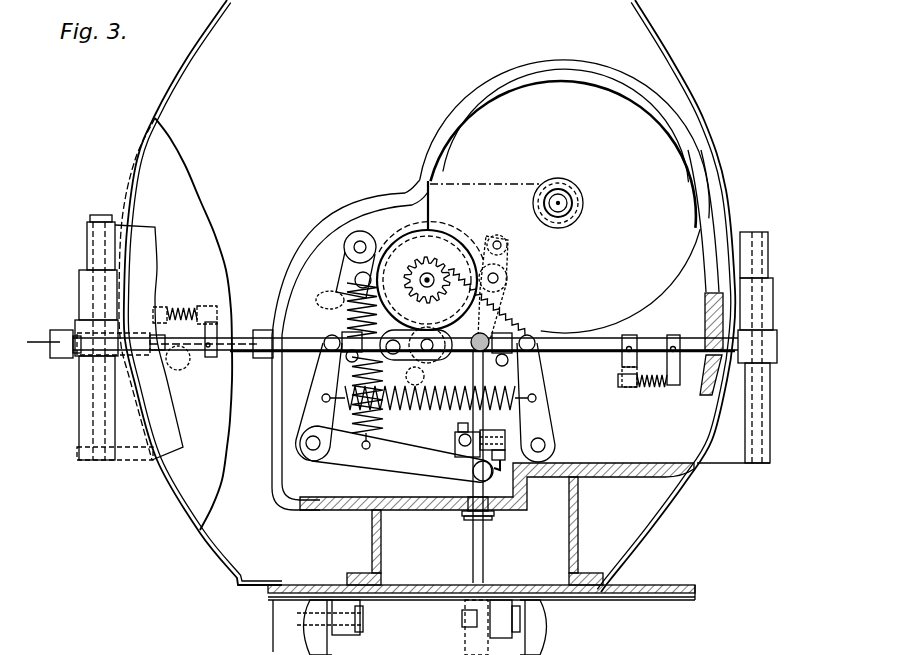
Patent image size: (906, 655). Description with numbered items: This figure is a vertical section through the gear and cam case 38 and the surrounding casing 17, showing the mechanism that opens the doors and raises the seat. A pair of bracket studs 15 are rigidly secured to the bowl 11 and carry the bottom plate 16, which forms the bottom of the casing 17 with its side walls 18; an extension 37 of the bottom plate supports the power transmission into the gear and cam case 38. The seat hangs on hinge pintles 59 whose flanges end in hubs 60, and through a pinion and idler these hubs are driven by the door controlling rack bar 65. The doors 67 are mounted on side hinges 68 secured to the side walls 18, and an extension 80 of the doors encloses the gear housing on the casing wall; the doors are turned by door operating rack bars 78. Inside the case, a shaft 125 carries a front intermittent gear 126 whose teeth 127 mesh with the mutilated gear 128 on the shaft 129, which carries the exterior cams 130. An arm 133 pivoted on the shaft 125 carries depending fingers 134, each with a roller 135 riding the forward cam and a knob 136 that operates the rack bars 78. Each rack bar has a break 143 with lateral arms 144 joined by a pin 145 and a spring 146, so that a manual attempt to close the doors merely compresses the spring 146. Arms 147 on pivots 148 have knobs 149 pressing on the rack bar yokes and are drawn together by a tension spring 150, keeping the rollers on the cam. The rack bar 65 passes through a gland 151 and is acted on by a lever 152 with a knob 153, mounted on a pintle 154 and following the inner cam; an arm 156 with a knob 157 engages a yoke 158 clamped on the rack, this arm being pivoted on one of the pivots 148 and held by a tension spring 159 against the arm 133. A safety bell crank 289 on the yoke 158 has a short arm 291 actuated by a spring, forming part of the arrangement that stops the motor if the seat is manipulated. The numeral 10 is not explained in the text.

The axis indication 10 is at (38, 340).
The bowl 11 is at (495, 553).
The bracket studs 15 is at (305, 642).
The bottom plate 16 is at (410, 594).
The casing 17 is at (672, 59).
The side walls 18 is at (158, 116).
The extension of the bottom plate 37 is at (640, 586).
The gear and cam case 38 is at (702, 232).
The hinge pintles 59 is at (365, 625).
The hubs 60 is at (330, 627).
The door controlling rack bar 65 is at (484, 553).
The doors 67 is at (220, 482).
The side hinges 68 is at (90, 240).
The door operating rack bars 78 is at (242, 353).
The extension of the doors 80 is at (173, 432).
The shaft 125 is at (566, 200).
The front intermittent gear 126 is at (655, 140).
The teeth 127 is at (500, 322).
The mutilated gear 128 is at (424, 302).
The shaft 129 is at (422, 272).
The exterior cams 130 is at (396, 250).
The arm 133 is at (408, 205).
The depending fingers 134 is at (350, 278).
The roller 135 is at (330, 300).
The knobs 136 is at (512, 337).
The break 143 is at (189, 326).
The lateral arms 144 is at (628, 352).
The pin 145 is at (628, 386).
The spring 146 is at (655, 386).
The arms 147 is at (322, 380).
The pivots 148 is at (311, 450).
The knobs 149 is at (333, 338).
The tension spring 150 is at (430, 412).
The gland 151 is at (465, 515).
The lever 152 is at (450, 355).
The knob 153 is at (416, 376).
The pintle 154 is at (393, 355).
The arm 156 is at (402, 466).
The knob 157 is at (476, 475).
The yoke 158 is at (462, 446).
The tension spring 159 is at (372, 445).
The bell crank 289 is at (504, 474).
The short arm 291 is at (498, 439).